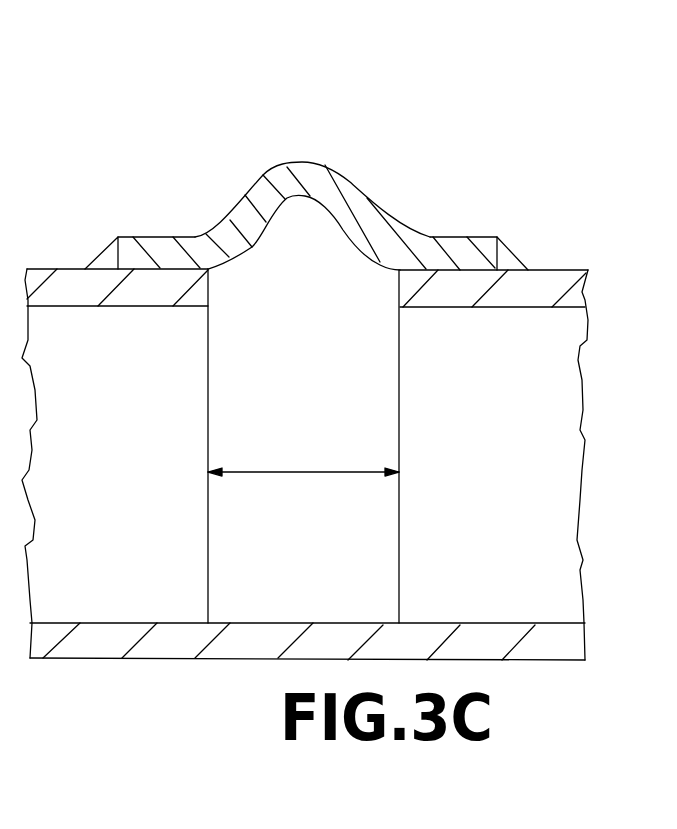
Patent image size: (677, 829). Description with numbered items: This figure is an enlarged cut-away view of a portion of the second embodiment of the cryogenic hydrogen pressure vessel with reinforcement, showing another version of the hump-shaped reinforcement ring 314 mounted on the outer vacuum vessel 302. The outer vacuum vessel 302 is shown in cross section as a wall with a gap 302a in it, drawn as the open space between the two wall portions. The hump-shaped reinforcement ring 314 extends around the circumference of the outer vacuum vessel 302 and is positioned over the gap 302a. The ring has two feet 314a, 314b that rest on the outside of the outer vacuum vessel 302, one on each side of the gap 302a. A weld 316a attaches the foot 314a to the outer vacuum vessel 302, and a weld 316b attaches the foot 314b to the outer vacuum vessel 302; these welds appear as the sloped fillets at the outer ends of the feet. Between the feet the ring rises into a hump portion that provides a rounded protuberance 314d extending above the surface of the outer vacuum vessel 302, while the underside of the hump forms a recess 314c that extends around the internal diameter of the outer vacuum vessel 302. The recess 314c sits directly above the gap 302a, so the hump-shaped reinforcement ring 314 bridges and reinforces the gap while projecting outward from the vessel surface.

The outer vacuum vessel 302 is at (133, 308).
The gap 302a is at (303, 465).
The hump-shaped reinforcement ring 314 is at (357, 123).
The foot 314a is at (155, 236).
The foot 314b is at (453, 237).
The recess 314c is at (277, 217).
The rounded protuberance 314d is at (363, 193).
The weld 316a is at (100, 258).
The weld 316b is at (525, 270).